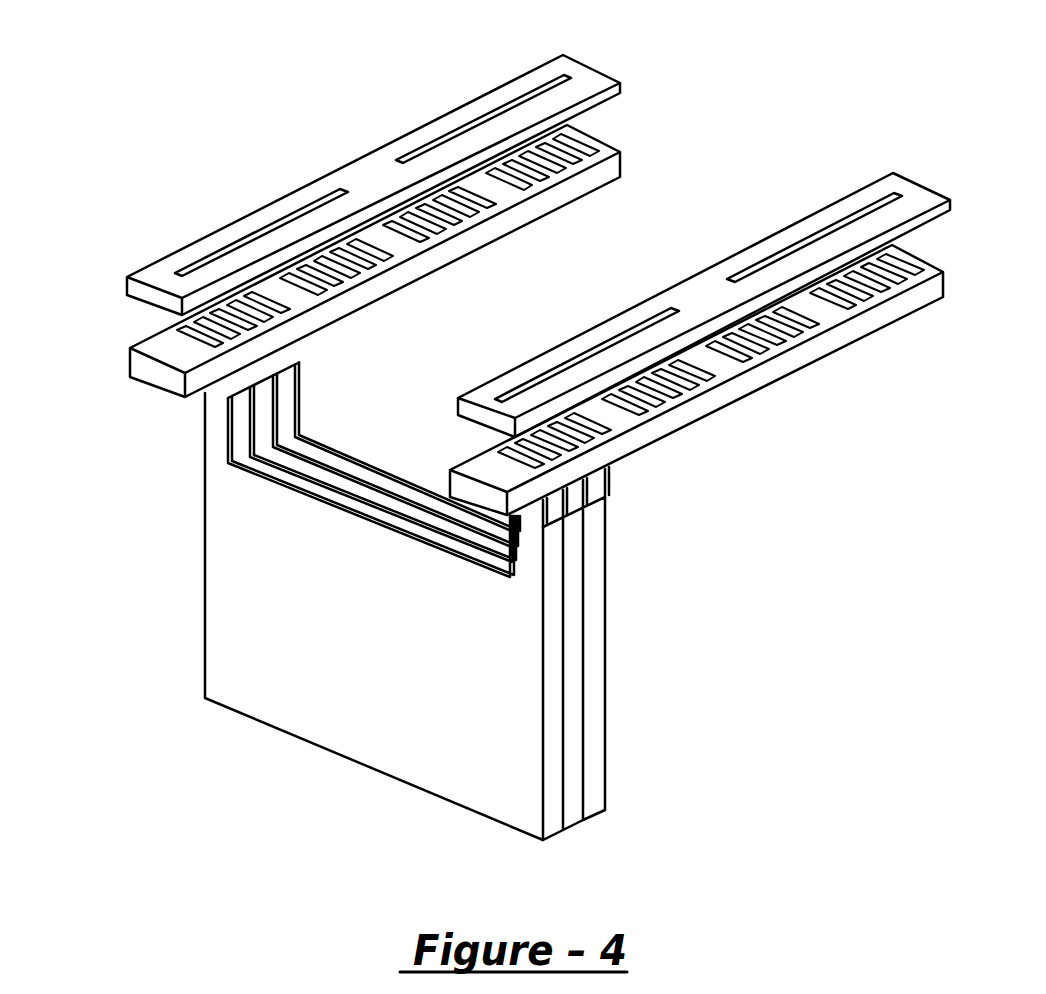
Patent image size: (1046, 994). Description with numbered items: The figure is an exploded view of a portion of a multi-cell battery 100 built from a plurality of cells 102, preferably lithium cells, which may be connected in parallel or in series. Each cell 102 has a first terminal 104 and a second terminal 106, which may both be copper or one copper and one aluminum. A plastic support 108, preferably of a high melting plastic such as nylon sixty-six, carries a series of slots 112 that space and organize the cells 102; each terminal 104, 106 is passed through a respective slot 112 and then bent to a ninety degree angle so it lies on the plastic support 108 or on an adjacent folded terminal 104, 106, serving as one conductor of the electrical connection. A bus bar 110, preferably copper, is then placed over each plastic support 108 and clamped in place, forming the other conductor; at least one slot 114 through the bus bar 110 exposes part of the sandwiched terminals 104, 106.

The multi-cell battery 100 is at (326, 140).
The cell 102 is at (205, 650).
The first terminal 104 is at (533, 537).
The second terminal 106 is at (209, 420).
The plastic support 108 is at (620, 152).
The bus bar 110 is at (243, 222).
The slot 112 is at (473, 205).
The slot 114 is at (472, 130).